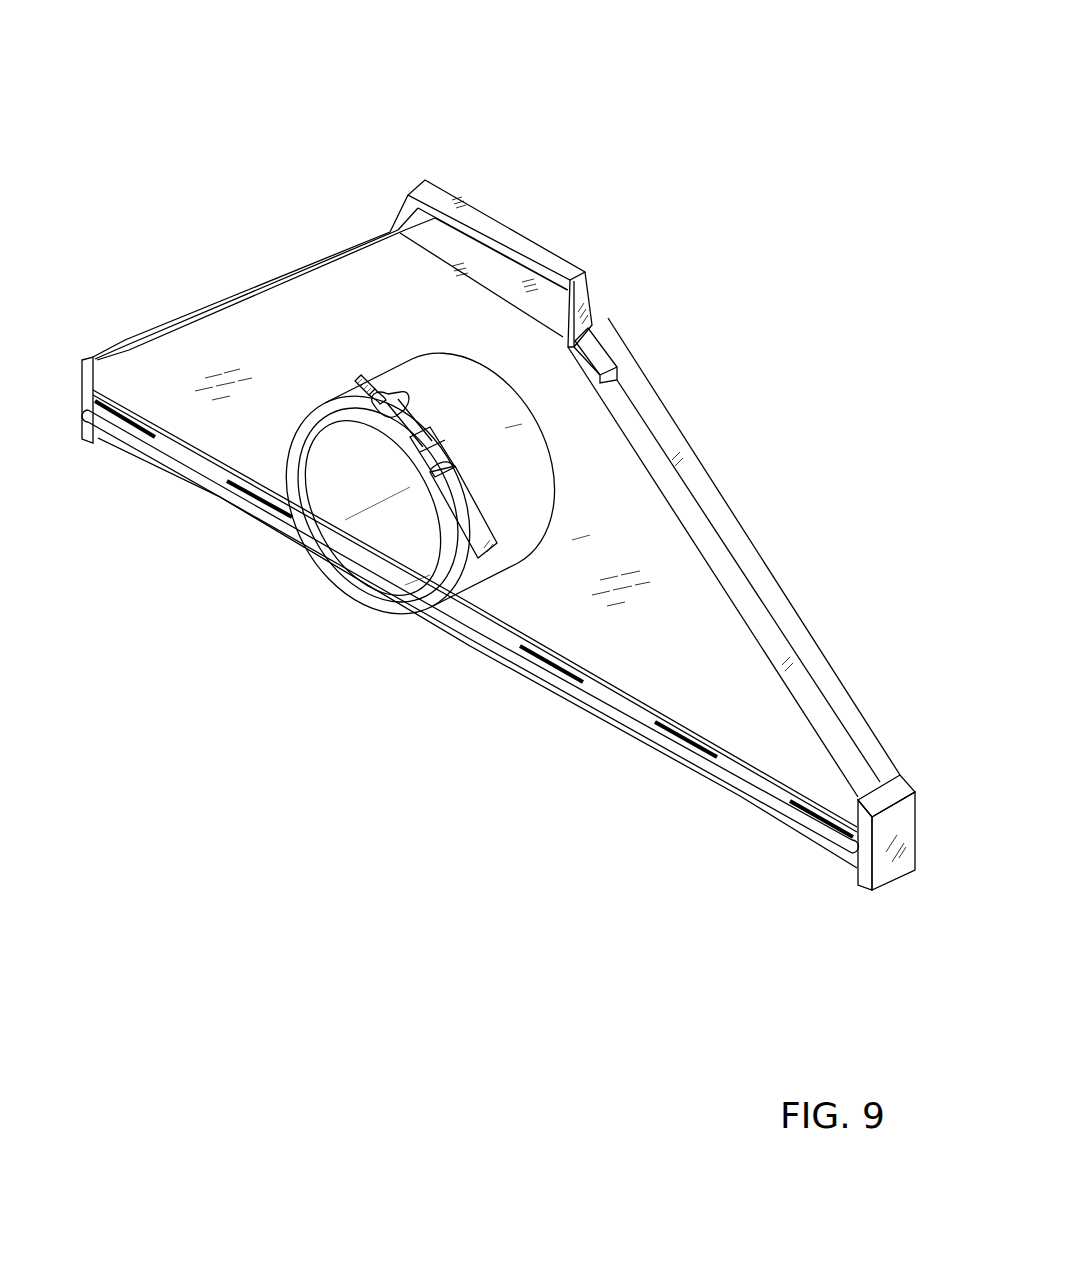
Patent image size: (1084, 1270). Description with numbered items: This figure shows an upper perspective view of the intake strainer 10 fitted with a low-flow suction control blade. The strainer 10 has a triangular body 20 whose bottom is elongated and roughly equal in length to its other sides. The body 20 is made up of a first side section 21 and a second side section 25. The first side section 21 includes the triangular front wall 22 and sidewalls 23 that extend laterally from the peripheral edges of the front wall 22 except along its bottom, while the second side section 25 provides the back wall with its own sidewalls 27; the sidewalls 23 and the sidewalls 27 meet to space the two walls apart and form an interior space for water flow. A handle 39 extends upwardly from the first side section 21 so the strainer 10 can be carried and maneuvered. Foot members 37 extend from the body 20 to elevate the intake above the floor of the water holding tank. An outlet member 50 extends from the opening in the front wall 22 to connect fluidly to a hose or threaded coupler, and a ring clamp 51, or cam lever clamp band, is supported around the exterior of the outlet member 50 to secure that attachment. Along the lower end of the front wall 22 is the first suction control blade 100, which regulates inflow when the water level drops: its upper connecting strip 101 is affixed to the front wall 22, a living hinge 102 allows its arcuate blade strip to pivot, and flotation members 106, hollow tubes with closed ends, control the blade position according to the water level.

The strainer 10 is at (208, 95).
The body 20 is at (296, 262).
The first side section 21 is at (734, 557).
The front wall 22 is at (470, 657).
The sidewalls 23 is at (676, 492).
The second side section 25 is at (663, 396).
The sidewalls 27 is at (722, 510).
The foot members 37 is at (100, 443).
The handle 39 is at (487, 215).
The outlet member 50 is at (400, 383).
The ring clamp 51 is at (350, 592).
The first suction control blade 100 is at (470, 663).
The upper connecting strip 101 is at (612, 690).
The living hinge 102 is at (678, 743).
The flotation members 106 is at (467, 642).